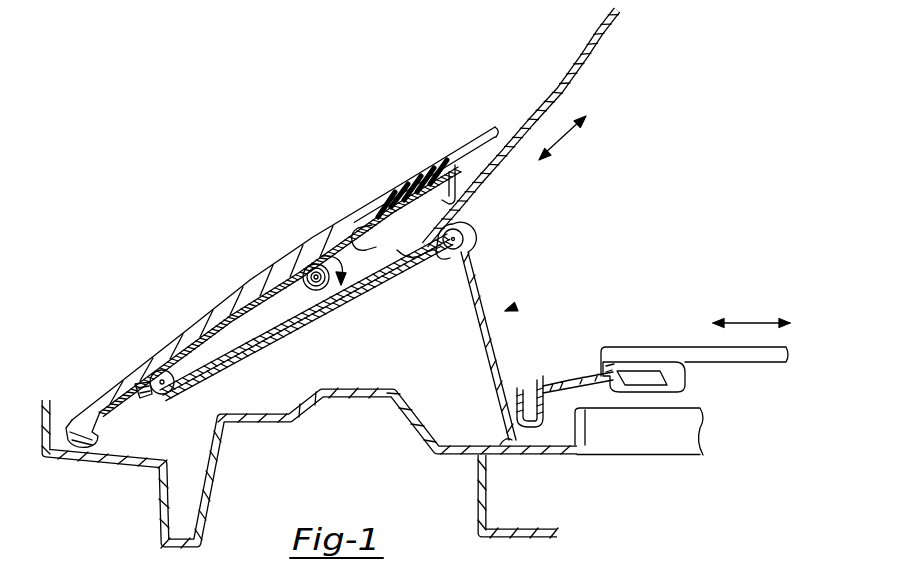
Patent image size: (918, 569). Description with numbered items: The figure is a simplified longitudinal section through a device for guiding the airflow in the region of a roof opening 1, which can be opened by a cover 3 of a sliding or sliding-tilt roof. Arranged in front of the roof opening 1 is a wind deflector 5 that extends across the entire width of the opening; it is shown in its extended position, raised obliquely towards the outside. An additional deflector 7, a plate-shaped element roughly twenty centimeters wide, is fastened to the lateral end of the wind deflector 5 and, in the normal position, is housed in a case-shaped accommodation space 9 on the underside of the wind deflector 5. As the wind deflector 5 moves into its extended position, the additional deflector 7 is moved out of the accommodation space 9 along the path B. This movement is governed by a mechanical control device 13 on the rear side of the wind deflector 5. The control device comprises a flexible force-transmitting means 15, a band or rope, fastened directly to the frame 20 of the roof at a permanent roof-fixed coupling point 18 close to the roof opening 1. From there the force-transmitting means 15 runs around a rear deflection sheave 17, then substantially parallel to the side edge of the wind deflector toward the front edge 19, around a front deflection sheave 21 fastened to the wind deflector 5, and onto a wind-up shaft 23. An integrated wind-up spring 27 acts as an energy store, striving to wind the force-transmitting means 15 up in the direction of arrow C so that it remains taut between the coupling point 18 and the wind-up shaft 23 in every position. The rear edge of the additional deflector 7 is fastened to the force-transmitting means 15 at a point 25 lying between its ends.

The roof opening 1 is at (686, 406).
The cover 3 is at (703, 352).
The wind deflector 5 is at (444, 163).
The additional deflector 7 is at (582, 52).
The accommodation space 9 is at (358, 258).
The control device 13 is at (512, 308).
The flexible force-transmitting means 15 is at (495, 347).
The rear deflection sheave 17 is at (464, 242).
The roof-fixed coupling point 18 is at (493, 440).
The front edge 19 is at (87, 413).
The frame 20 is at (253, 417).
The front deflection sheave 21 is at (160, 377).
The wind-up shaft 23 is at (314, 270).
The point 25 is at (392, 243).
The wind-up spring 27 is at (325, 313).
The path B is at (566, 138).
The arrow C is at (330, 262).